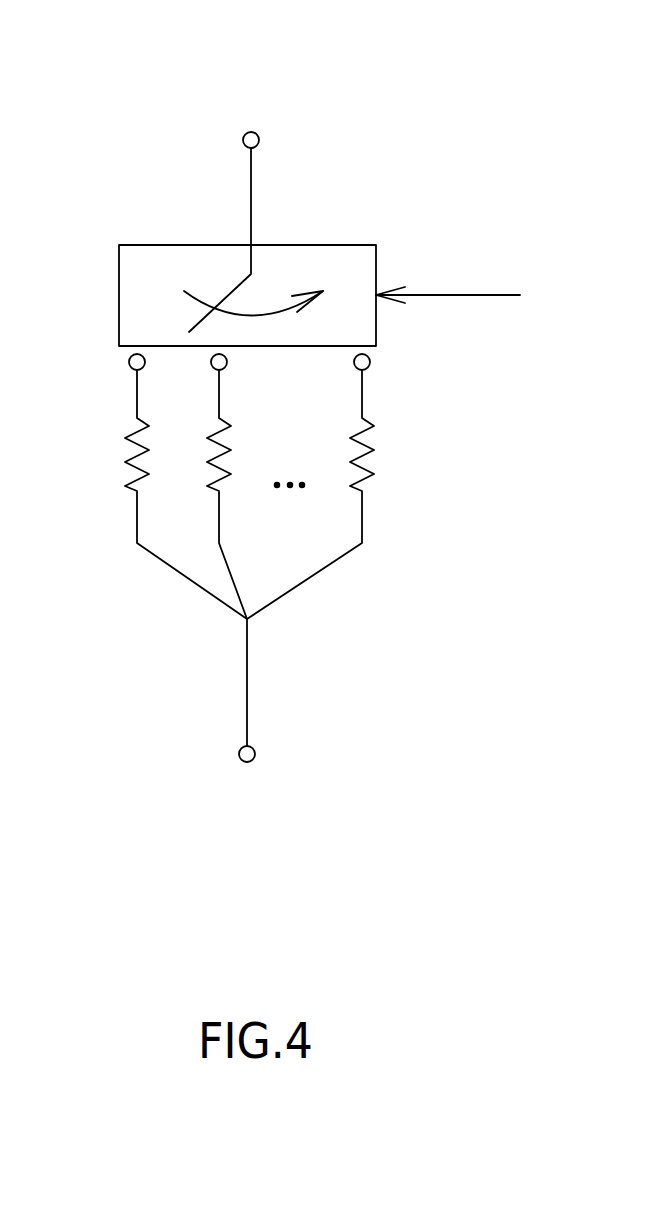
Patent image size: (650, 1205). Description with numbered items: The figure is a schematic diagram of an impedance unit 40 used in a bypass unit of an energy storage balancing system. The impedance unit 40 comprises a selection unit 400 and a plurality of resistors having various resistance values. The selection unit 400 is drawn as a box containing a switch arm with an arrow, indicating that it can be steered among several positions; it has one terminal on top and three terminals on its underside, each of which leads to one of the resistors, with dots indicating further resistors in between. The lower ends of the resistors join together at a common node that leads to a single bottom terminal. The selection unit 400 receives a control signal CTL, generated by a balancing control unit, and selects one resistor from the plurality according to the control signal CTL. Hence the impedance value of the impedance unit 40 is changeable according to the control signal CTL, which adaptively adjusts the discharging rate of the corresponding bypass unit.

The impedance unit 40 is at (310, 394).
The selection unit 400 is at (119, 290).
The control signal CTL is at (479, 297).